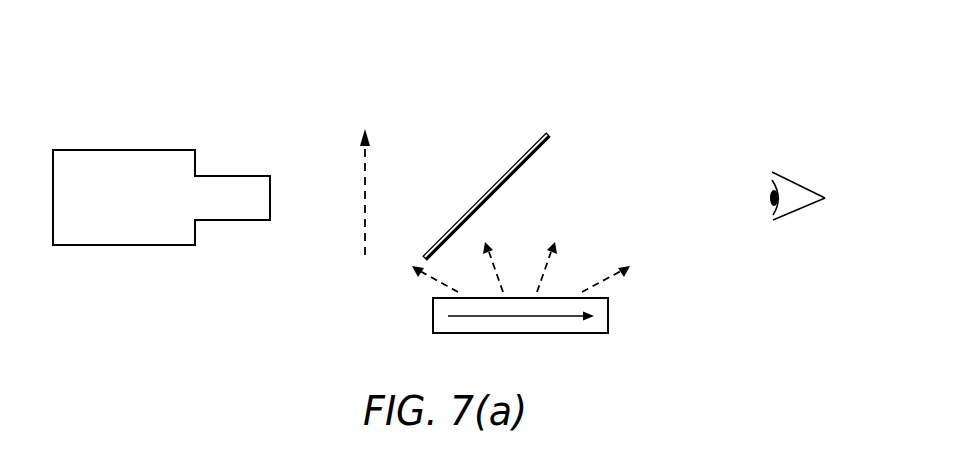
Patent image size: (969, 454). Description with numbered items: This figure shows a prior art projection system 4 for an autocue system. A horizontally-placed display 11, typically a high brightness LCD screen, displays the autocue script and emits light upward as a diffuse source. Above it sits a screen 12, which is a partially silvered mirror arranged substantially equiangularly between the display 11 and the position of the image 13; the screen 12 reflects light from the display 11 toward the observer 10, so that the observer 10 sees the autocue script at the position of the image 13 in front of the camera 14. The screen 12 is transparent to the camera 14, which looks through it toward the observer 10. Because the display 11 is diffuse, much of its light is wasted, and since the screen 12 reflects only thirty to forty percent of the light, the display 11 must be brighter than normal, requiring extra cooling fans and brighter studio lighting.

The projection system 4 is at (224, 55).
The observer 10 is at (802, 185).
The display 11 is at (590, 334).
The screen 12 is at (530, 148).
The position of the image 13 is at (363, 234).
The camera 14 is at (73, 150).